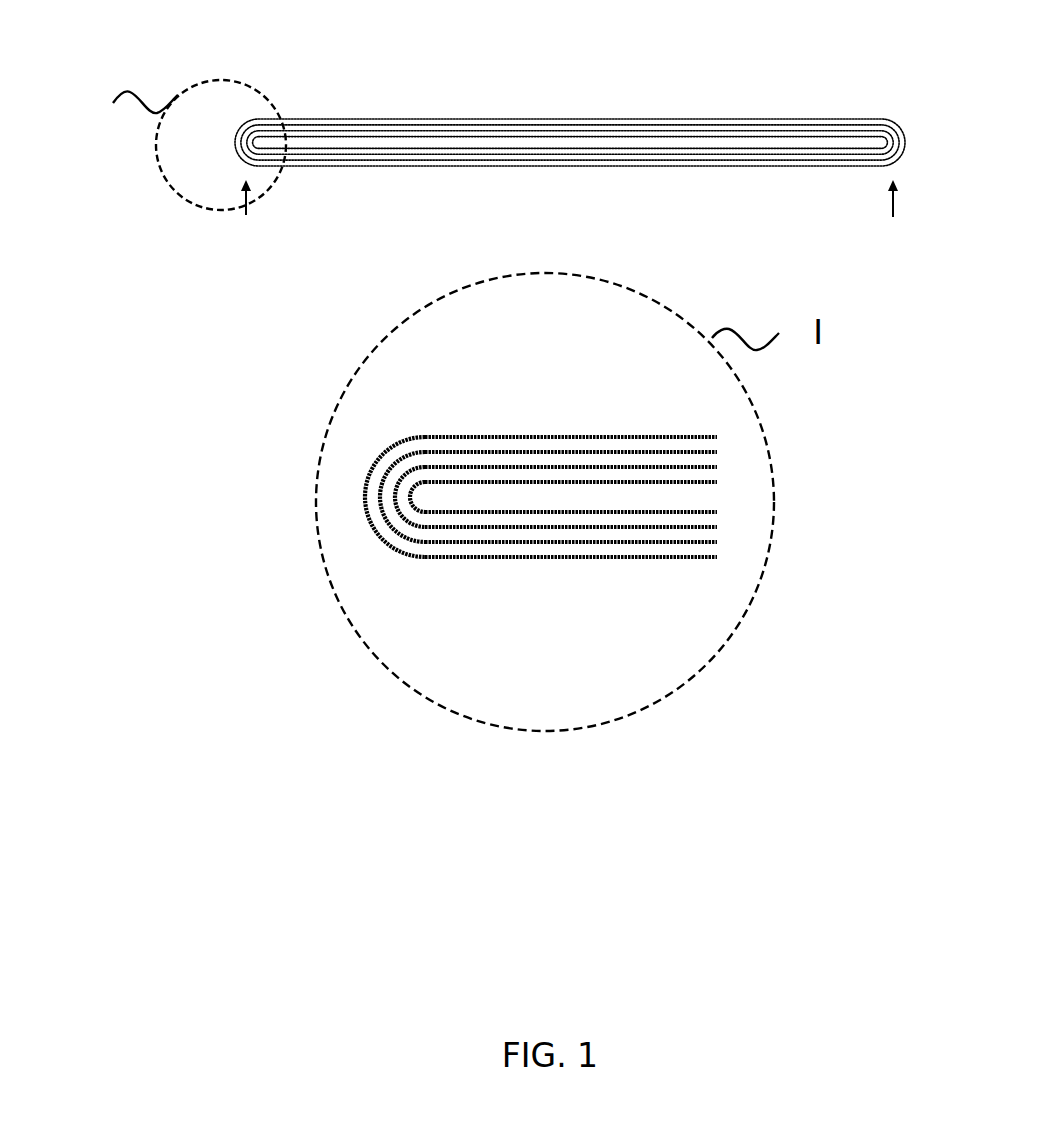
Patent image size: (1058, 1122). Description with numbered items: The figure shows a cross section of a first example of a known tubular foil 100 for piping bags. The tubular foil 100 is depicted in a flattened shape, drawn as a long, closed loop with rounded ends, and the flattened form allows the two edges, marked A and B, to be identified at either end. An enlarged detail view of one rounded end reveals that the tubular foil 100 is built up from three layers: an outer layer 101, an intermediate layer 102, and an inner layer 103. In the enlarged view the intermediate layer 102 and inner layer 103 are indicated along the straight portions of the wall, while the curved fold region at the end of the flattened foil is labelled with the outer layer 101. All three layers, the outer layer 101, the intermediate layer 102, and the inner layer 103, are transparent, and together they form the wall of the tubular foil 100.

The tubular foil 100 is at (292, 32).
The outer layer 101 is at (380, 515).
The intermediate layer 102 is at (697, 457).
The inner layer 103 is at (697, 517).